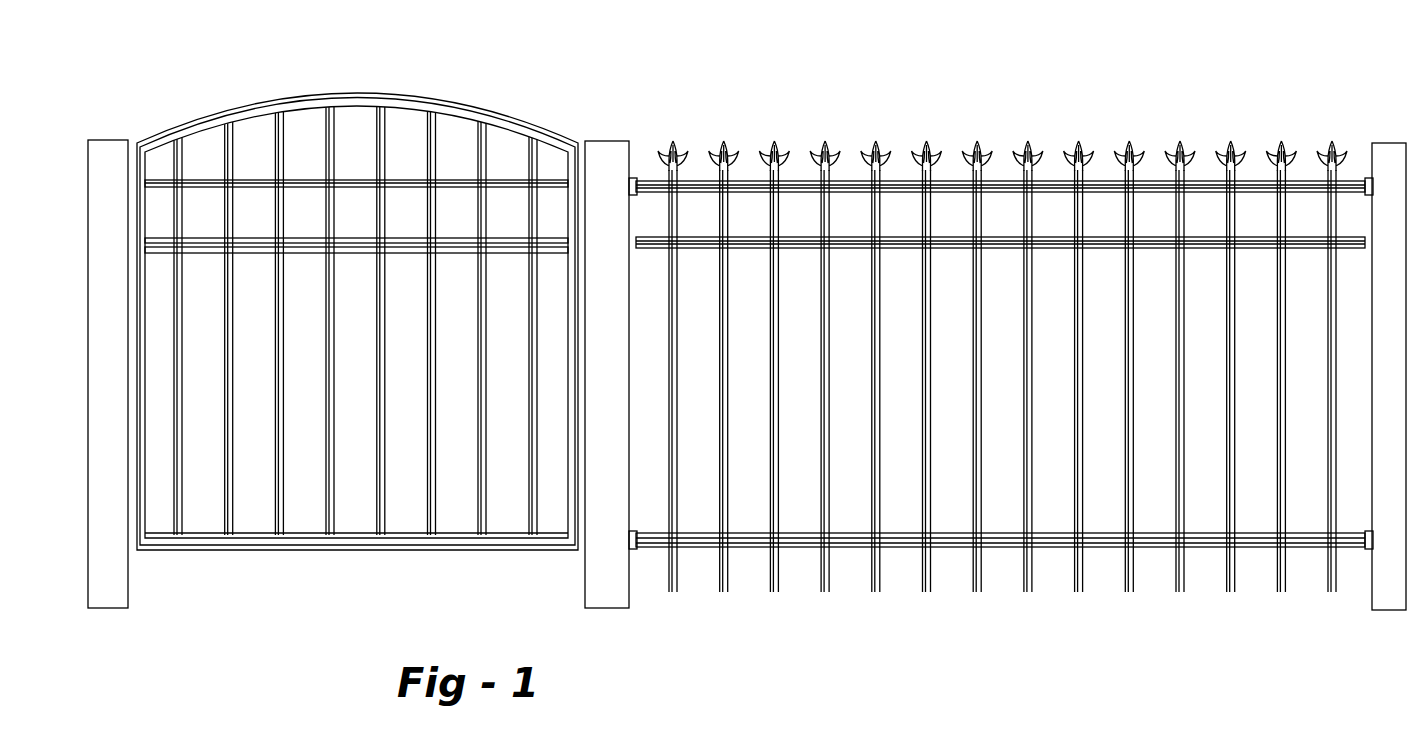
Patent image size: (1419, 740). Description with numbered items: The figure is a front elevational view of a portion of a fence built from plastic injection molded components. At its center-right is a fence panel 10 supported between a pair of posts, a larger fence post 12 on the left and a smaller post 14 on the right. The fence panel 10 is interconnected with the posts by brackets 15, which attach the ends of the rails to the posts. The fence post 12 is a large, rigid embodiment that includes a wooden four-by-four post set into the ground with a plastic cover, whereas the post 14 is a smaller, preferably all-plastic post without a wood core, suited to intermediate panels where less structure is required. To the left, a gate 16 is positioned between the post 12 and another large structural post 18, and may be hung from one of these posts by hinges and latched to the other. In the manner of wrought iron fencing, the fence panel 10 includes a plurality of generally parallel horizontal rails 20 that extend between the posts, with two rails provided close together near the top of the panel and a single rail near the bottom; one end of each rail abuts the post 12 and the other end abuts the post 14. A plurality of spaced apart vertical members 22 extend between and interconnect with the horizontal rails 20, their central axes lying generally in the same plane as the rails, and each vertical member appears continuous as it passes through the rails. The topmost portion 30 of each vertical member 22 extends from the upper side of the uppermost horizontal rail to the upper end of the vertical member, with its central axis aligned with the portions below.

The fence panel 10 is at (999, 361).
The fence post 12 is at (603, 148).
The post 14 is at (1396, 147).
The bracket 15 is at (633, 178).
The gate 16 is at (463, 93).
The post 18 is at (105, 153).
The horizontal rail 20 is at (998, 187).
The vertical member 22 is at (822, 592).
The topmost portion 30 is at (780, 150).